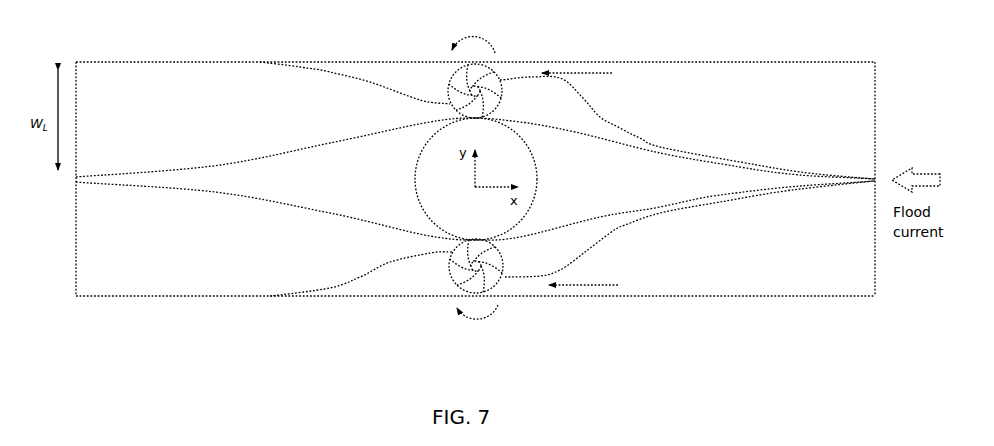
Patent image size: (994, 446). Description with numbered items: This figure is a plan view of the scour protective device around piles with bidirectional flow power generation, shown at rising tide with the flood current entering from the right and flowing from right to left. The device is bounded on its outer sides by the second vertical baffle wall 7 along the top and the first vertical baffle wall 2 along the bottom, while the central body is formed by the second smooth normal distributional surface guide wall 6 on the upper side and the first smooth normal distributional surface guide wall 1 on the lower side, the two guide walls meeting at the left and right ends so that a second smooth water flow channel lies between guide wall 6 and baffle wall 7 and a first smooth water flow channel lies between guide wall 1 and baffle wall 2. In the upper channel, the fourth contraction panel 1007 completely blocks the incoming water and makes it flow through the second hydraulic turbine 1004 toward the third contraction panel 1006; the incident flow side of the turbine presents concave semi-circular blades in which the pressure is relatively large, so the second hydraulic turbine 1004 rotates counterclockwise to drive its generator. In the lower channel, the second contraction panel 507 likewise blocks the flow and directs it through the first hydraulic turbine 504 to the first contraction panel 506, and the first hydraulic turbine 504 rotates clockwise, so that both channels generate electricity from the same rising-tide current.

The second vertical baffle wall 7 is at (167, 62).
The first vertical baffle wall 2 is at (146, 296).
The second smooth normal distributional surface guide wall 6 is at (220, 165).
The first smooth normal distributional surface guide wall 1 is at (215, 192).
The second hydraulic turbine 1004 is at (457, 72).
The first hydraulic turbine 504 is at (457, 287).
The third contraction panel 1006 is at (373, 83).
The fourth contraction panel 1007 is at (600, 117).
The first contraction panel 506 is at (330, 288).
The second contraction panel 507 is at (623, 227).